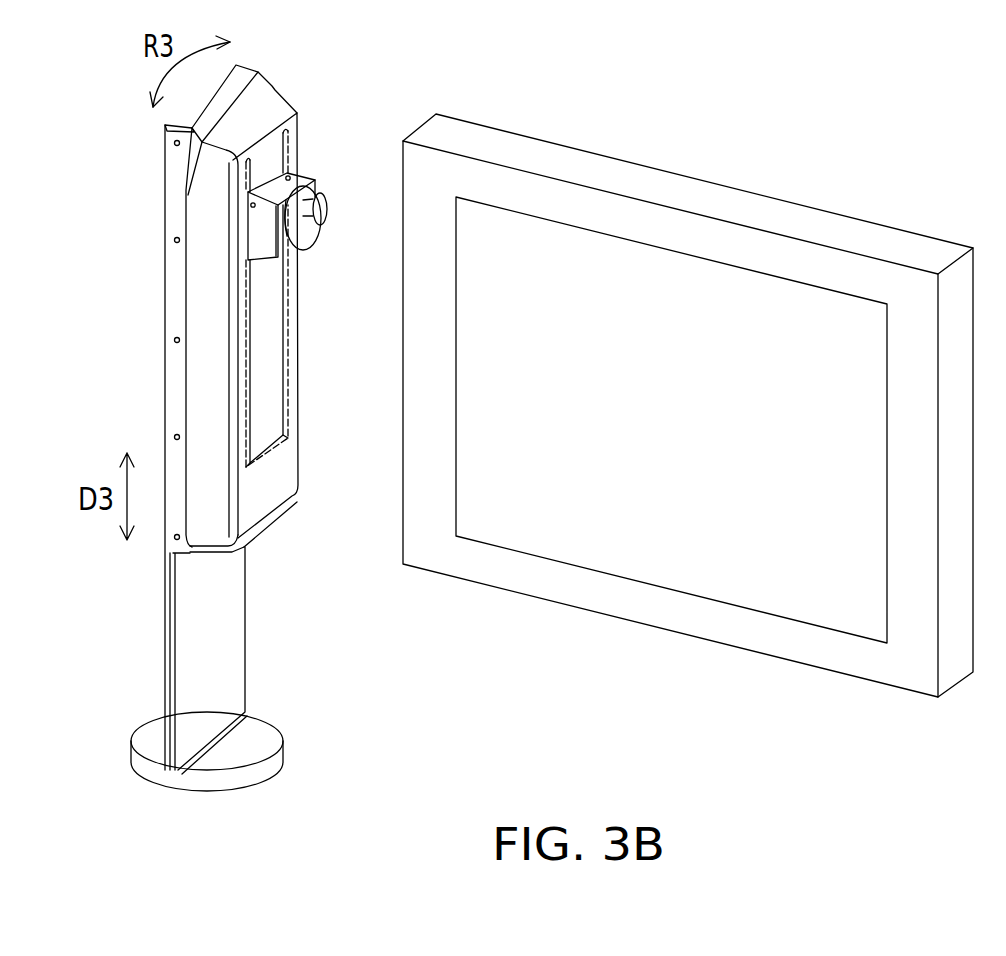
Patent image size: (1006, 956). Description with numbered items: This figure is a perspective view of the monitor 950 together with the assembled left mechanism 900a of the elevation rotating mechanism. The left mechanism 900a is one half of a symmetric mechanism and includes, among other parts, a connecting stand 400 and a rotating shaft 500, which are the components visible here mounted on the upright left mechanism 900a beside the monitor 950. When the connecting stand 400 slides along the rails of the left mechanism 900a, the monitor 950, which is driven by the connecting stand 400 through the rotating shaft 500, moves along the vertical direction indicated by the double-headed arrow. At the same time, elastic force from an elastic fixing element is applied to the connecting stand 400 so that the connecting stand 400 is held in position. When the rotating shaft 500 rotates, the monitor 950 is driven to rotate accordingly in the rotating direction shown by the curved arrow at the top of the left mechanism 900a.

The connecting stand 400 is at (312, 175).
The rotating shaft 500 is at (325, 210).
The left mechanism 900a is at (172, 303).
The monitor 950 is at (700, 197).